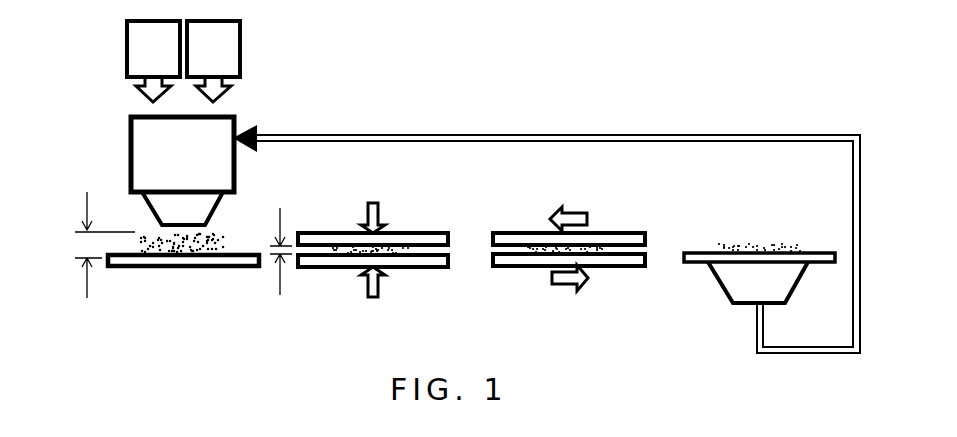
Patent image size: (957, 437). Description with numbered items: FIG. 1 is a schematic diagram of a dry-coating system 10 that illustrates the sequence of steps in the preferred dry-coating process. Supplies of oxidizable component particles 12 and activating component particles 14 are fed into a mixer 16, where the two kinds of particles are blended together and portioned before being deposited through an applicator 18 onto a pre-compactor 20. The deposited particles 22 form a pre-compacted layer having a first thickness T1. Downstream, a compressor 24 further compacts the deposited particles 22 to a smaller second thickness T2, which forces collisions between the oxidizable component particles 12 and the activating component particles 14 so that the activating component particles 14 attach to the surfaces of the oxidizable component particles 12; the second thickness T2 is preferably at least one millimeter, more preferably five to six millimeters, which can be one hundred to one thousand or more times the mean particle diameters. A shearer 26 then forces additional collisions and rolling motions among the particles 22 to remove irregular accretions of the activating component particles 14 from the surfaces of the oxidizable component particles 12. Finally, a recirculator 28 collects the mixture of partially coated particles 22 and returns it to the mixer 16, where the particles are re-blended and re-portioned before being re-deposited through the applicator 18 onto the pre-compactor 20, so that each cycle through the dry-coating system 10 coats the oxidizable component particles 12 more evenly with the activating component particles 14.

The dry-coating system 10 is at (446, 53).
The oxidizable component particles 12 is at (162, 59).
The activating component particles 14 is at (222, 59).
The mixer 16 is at (194, 168).
The applicator 18 is at (168, 208).
The pre-compactor 20 is at (140, 268).
The deposited particles 22 is at (223, 231).
The compressor 24 is at (405, 232).
The shearer 26 is at (607, 232).
The recirculator 28 is at (722, 285).
The first thickness T1 is at (87, 290).
The second thickness T2 is at (280, 290).